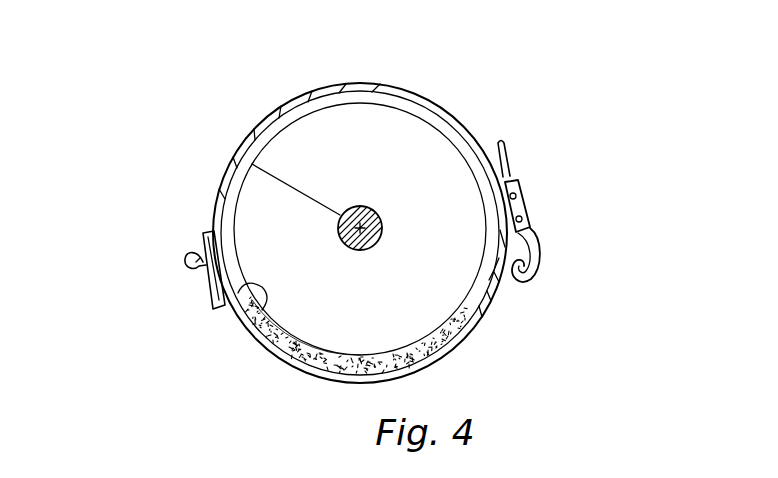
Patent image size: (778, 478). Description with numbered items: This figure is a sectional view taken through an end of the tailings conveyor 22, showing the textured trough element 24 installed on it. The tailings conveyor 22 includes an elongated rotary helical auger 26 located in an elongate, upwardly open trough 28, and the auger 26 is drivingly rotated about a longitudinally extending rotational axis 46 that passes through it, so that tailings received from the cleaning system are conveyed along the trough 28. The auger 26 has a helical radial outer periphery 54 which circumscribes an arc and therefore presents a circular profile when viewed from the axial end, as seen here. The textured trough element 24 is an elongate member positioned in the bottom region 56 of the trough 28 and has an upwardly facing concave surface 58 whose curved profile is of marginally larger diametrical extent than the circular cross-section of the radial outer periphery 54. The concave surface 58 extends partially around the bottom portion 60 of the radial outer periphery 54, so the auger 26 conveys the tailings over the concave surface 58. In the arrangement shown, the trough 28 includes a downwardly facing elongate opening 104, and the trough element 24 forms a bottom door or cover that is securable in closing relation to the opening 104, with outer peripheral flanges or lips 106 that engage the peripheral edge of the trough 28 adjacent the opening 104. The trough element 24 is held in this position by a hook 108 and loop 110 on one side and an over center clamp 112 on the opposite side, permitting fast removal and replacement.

The tailings conveyor 22 is at (183, 161).
The textured trough element 24 is at (280, 328).
The rotary helical auger 26 is at (442, 108).
The trough 28 is at (489, 294).
The rotational axis 46 is at (369, 205).
The radial outer periphery 54 is at (355, 82).
The bottom region 56 is at (226, 298).
The concave surface 58 is at (393, 362).
The bottom portion 60 is at (347, 363).
The elongate opening 104 is at (478, 318).
The outer peripheral flanges 106 is at (236, 289).
The hook 108 is at (186, 264).
The loop 110 is at (210, 286).
The lever 112 is at (533, 238).